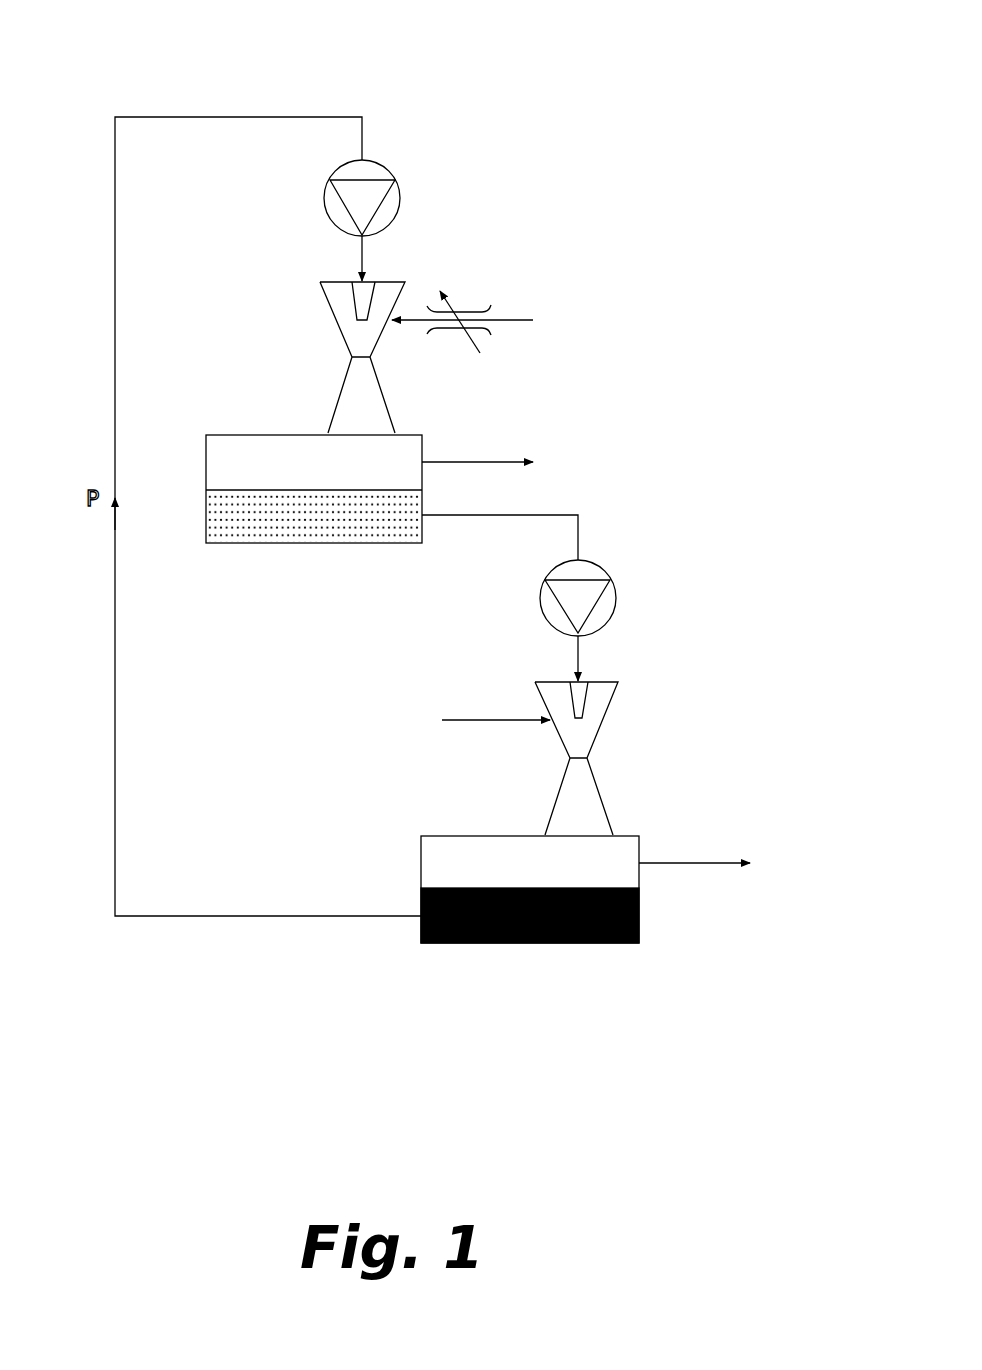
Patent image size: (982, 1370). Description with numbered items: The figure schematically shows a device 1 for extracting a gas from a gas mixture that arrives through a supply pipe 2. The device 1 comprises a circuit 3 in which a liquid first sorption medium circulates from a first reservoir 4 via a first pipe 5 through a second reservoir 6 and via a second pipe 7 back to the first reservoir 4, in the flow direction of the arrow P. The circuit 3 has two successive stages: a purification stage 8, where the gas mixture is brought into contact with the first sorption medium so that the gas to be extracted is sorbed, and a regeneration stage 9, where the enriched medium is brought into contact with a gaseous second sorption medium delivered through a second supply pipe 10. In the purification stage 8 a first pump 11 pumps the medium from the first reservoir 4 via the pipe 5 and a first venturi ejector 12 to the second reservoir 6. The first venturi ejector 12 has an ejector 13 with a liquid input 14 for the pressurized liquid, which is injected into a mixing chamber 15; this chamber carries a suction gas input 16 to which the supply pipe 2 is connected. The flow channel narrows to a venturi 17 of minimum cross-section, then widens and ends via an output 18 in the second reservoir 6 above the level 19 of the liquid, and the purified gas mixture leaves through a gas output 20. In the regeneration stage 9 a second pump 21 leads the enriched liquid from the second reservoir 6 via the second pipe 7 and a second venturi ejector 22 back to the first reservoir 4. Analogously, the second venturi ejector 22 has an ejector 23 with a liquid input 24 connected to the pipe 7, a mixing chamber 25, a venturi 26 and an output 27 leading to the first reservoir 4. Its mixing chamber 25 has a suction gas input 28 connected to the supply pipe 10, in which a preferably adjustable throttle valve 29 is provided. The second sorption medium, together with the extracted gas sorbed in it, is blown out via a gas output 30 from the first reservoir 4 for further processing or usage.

The device 1 is at (688, 91).
The supply pipe 2 is at (478, 720).
The circuit 3 is at (176, 86).
The first reservoir 4 is at (206, 462).
The first pipe 5 is at (580, 538).
The second reservoir 6 is at (435, 945).
The second pipe 7 is at (113, 808).
The purification stage 8 is at (779, 519).
The regeneration stage 9 is at (506, 223).
The second supply pipe 10 is at (493, 312).
The first pump 11 is at (607, 601).
The first venturi ejector 12 is at (646, 715).
The ejector 13 is at (578, 697).
The liquid input 14 is at (583, 676).
The mixing chamber 15 is at (582, 732).
The suction gas input 16 is at (548, 724).
The venturi 17 is at (570, 762).
The output 18 is at (583, 835).
The level 19 is at (455, 888).
The gas output 20 is at (645, 858).
The second pump 21 is at (386, 170).
The second venturi ejector 22 is at (313, 357).
The ejector 23 is at (360, 300).
The liquid input 24 is at (368, 278).
The mixing chamber 25 is at (368, 338).
The venturi 26 is at (345, 360).
The output 27 is at (362, 433).
The suction gas input 28 is at (395, 318).
The throttle valve 29 is at (484, 330).
The gas output 30 is at (432, 460).